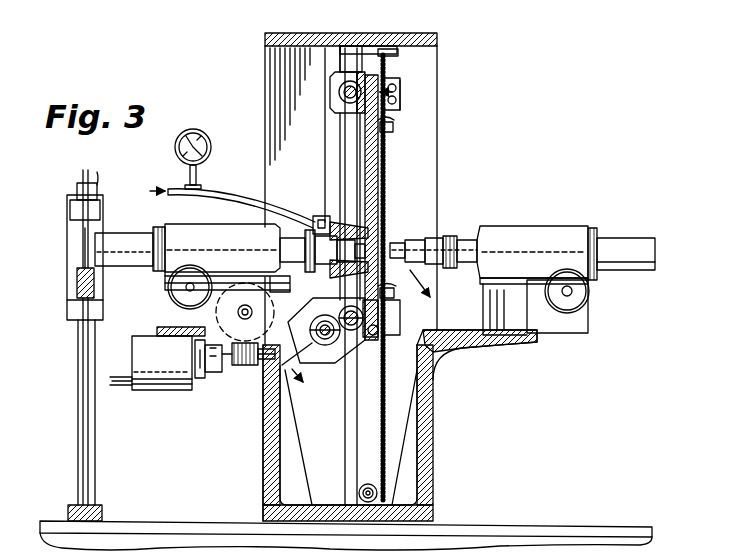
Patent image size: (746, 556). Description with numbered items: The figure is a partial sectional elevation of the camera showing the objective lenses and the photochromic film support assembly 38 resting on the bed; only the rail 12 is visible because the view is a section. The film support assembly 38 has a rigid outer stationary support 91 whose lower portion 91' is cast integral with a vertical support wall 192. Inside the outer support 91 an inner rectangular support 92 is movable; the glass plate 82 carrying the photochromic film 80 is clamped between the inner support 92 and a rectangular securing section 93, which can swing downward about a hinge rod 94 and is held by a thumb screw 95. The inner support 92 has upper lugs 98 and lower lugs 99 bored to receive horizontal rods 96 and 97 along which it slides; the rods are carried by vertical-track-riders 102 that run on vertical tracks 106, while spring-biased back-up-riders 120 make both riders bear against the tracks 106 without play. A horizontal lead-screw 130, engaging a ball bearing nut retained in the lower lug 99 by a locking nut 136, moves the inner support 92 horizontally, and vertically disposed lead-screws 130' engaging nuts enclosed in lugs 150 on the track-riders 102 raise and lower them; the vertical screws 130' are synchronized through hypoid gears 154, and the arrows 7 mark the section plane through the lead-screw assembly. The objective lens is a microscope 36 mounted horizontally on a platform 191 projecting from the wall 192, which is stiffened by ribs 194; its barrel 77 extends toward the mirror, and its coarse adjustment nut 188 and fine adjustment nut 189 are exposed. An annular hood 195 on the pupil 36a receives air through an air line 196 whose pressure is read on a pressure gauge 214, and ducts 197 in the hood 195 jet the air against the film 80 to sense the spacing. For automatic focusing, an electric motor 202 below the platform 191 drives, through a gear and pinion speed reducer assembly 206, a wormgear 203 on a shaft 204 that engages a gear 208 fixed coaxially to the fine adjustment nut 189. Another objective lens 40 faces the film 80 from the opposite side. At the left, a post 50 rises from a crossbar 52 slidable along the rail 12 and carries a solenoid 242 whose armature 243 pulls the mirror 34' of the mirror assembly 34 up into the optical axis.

The section line 7- 7 is at (361, 335).
The rail 12 is at (135, 521).
The support stand 34 is at (64, 245).
The mirror 34' is at (62, 283).
The objective lens 36 is at (212, 226).
The pupil 36a is at (370, 250).
The photochromic film support assembly 38 is at (460, 152).
The spindle housing 40 is at (503, 226).
The post 50 is at (78, 350).
The crossbar 52 is at (68, 512).
The tube 77 is at (128, 233).
The photochromic film 80 is at (365, 183).
The glass plate 82 is at (380, 183).
The outer stationary support 91 is at (270, 195).
The lower portion of outer stationary support 91' is at (248, 433).
The inner rectangular support 92 is at (352, 112).
The rectangular securing section 93 is at (400, 105).
The hinge rod 94 is at (372, 335).
The thumb screw 95 is at (383, 78).
The horizontal rod 96 is at (339, 81).
The horizontal rod 97 is at (352, 306).
The upper lug 98 is at (350, 70).
The lower lug 99 is at (345, 314).
The vertical-track-rider 102 is at (345, 150).
The vertical track 106 is at (345, 427).
The back-up-rider 120 is at (342, 130).
The lead-screw 130 is at (315, 302).
The vertically disposed lead-screw 130' is at (406, 277).
The locking nut 136 is at (392, 129).
The lug 150 is at (400, 98).
The hypoid gear 154 is at (378, 497).
The coarse adjustment nut 188 is at (170, 288).
The fine adjustment nut 189 is at (264, 276).
The platform 191 is at (165, 327).
The vertical support wall 192 is at (262, 449).
The stiffening rib 194 is at (212, 378).
The annular hood 195 is at (330, 222).
The air line 196 is at (268, 196).
The duct 197 is at (313, 218).
The electric motor 202 is at (152, 391).
The wormgear 203 is at (250, 365).
The shaft 204 is at (292, 380).
The gear and pinion speed reducer assembly 206 is at (192, 361).
The gear 208 is at (238, 313).
The pressure gauge 214 is at (212, 139).
The solenoid 242 is at (100, 195).
The armature 243 is at (82, 242).